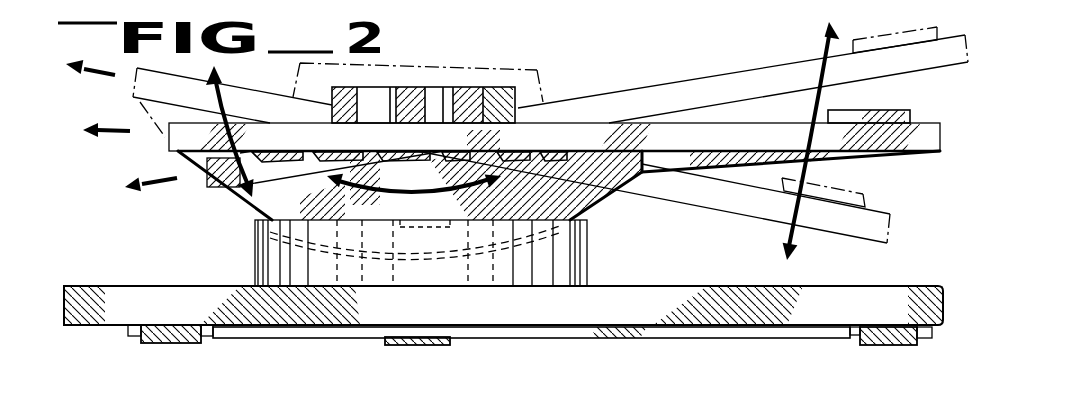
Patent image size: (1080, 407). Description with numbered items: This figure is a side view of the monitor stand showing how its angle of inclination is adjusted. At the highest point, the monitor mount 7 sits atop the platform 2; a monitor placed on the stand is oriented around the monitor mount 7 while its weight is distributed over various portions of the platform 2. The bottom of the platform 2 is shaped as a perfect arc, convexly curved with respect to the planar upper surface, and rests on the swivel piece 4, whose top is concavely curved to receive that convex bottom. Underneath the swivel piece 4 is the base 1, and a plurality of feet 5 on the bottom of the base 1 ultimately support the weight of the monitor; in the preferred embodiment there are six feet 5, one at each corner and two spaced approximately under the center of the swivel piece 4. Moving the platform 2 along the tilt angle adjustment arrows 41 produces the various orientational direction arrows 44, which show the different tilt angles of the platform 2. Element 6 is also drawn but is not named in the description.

The base 1 is at (524, 308).
The platform 2 is at (726, 136).
The swivel piece 4 is at (288, 264).
The feet 5 is at (170, 333).
The stop block 6 is at (898, 117).
The monitor mount 7 is at (478, 133).
The tilt angle adjustment arrows 41 is at (275, 219).
The orientational direction arrows 44 is at (138, 190).